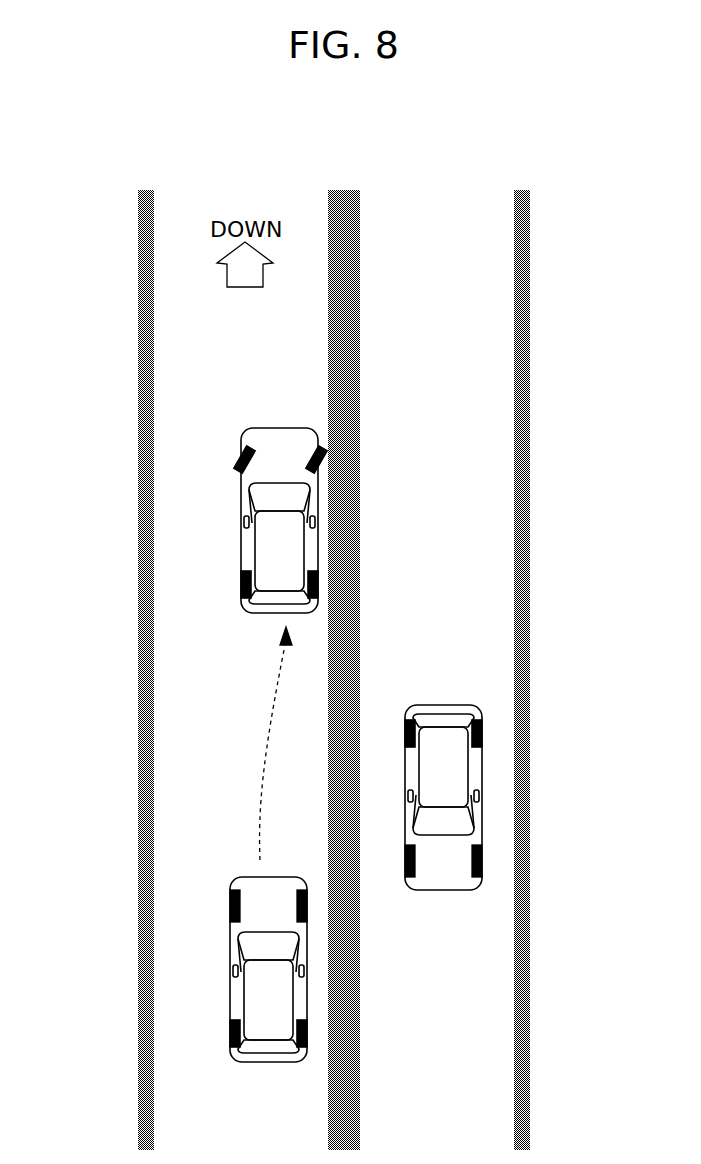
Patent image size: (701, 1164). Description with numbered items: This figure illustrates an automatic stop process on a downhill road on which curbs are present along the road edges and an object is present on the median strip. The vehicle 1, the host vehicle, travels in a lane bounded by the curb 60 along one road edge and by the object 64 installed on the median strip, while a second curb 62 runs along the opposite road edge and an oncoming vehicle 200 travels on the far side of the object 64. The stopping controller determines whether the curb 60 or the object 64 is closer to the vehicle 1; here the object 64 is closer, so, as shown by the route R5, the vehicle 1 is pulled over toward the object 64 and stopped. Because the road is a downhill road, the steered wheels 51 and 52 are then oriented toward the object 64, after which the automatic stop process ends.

The vehicle 1 is at (270, 555).
The steered wheel 51 is at (243, 457).
The steered wheel 52 is at (307, 457).
The curb 60 is at (138, 262).
The curb 62 is at (530, 248).
The object 64 is at (360, 262).
The oncoming vehicle 200 is at (449, 752).
The route R5 is at (256, 743).